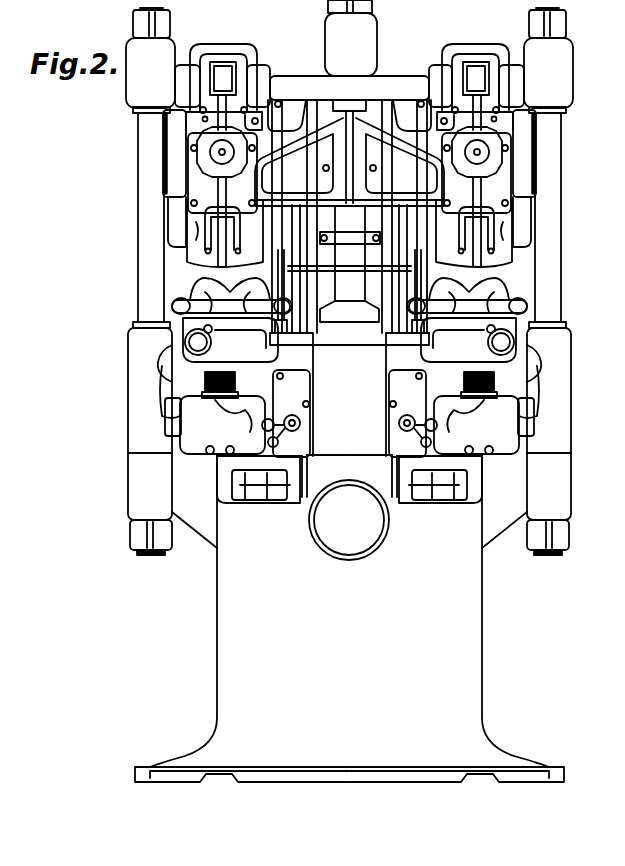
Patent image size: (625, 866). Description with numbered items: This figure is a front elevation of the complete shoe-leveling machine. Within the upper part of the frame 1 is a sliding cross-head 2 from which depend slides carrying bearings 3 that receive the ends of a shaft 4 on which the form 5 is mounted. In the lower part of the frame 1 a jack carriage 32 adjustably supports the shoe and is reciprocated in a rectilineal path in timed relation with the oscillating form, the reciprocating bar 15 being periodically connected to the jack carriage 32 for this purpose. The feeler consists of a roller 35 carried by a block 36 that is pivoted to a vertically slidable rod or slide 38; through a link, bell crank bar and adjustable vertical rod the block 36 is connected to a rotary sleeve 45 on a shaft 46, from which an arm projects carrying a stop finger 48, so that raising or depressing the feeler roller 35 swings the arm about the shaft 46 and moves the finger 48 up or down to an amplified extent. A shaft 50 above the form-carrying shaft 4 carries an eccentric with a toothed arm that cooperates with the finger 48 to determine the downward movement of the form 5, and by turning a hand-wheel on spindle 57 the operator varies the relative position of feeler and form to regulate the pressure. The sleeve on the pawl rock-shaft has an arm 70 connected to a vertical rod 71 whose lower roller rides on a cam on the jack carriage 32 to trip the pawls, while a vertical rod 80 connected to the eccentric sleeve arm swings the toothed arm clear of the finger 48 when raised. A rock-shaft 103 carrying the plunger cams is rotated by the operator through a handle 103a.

The frame 1 is at (243, 650).
The sliding cross-head 2 is at (177, 200).
The bearings 3 is at (167, 228).
The shaft 4 is at (160, 216).
The form 5 is at (220, 256).
The reciprocating bar 15 is at (268, 470).
The jack carriage 32 is at (190, 413).
The feeler roller 35 is at (220, 258).
The block 36 is at (231, 248).
The vertically slidable rod 38 is at (194, 231).
The rotary sleeve 45 is at (246, 63).
The shaft 46 is at (222, 90).
The stop finger 48 is at (204, 118).
The shaft 50 is at (203, 155).
The spindle 57 is at (217, 160).
The arm 70 is at (287, 115).
The vertical rod 71 is at (281, 308).
The vertical rod 80 is at (313, 105).
The rock-shaft 103 is at (297, 432).
The handle 103a is at (262, 425).